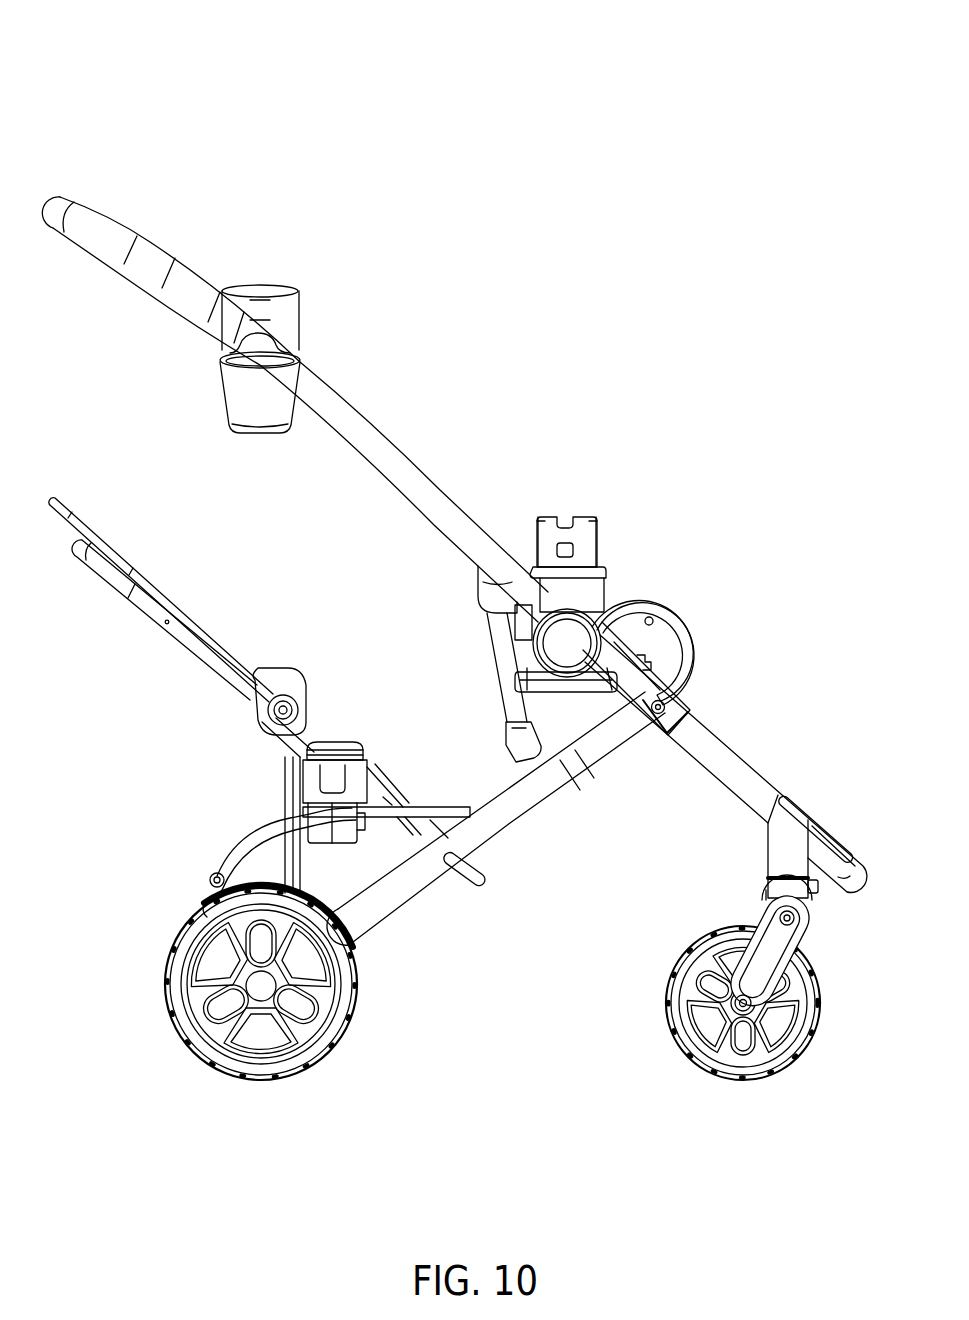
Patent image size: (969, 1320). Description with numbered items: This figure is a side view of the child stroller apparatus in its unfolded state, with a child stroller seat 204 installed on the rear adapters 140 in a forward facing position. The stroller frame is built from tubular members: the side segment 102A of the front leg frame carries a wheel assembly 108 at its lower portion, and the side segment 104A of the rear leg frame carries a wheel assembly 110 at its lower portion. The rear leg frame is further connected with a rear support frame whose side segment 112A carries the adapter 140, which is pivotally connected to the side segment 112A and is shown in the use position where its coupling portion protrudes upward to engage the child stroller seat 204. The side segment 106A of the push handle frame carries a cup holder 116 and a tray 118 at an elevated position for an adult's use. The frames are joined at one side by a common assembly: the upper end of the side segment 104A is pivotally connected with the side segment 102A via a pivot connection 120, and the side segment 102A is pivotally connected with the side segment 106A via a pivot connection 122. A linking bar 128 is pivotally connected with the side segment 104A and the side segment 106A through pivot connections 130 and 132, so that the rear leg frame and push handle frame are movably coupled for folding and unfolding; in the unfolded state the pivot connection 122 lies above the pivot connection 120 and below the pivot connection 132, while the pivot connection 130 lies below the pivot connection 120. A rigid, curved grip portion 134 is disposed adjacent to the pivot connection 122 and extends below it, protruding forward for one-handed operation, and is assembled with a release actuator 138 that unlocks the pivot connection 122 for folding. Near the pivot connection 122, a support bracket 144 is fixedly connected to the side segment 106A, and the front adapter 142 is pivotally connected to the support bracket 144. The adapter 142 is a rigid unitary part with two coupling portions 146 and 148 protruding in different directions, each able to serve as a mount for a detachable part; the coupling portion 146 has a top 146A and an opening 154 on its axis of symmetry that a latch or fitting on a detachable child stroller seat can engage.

The side segment of the front leg frame 102A is at (742, 764).
The side segment of the rear leg frame 104A is at (516, 820).
The side segment of the push handle frame 106A is at (343, 430).
The wheel assembly 108 is at (762, 1078).
The wheel assembly 110 is at (308, 1073).
The side segment of the rear support frame 112A is at (438, 806).
The cup holder 116 is at (238, 410).
The tray 118 is at (268, 290).
The pivot connection 120 is at (657, 716).
The pivot connection 122 is at (530, 641).
The linking bar 128 is at (497, 690).
The pivot connection 130 is at (524, 754).
The pivot connection 132 is at (484, 597).
The grip portion 134 is at (682, 650).
The release actuator 138 is at (657, 626).
The adapter 140 is at (290, 817).
The adapter 142 is at (590, 704).
The support bracket 144 is at (582, 582).
The coupling portion 146 is at (583, 535).
The top of the coupling portion 146A is at (552, 516).
The coupling portion 148 is at (632, 644).
The opening 154 is at (553, 549).
The child stroller seat 204 is at (302, 701).